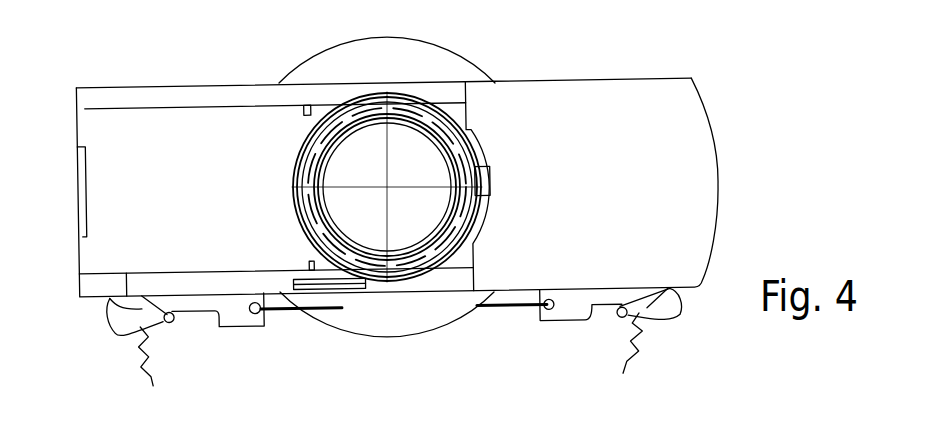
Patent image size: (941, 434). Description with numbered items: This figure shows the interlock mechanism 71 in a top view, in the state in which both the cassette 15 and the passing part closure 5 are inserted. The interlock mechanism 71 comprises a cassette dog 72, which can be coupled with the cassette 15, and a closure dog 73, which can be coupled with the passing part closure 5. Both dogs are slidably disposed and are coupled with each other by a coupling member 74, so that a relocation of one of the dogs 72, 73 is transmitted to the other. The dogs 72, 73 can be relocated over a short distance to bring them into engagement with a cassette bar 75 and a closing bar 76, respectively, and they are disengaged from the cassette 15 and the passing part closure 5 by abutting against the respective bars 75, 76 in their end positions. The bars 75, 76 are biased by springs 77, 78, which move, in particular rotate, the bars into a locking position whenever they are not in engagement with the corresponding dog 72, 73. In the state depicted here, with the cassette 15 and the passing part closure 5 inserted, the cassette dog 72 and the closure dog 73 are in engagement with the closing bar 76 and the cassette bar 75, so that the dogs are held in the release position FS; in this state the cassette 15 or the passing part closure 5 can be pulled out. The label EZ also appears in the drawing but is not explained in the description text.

The passing part closure 5 is at (588, 79).
The cassette 15 is at (187, 86).
The interlock mechanism 71 is at (384, 350).
The cassette dog 72 is at (228, 329).
The closure dog 73 is at (558, 322).
The coupling member 74 is at (281, 312).
The cassette bar 75 is at (112, 333).
The closing bar 76 is at (660, 318).
The spring 77 is at (626, 358).
The spring 78 is at (158, 371).
The reference plane EZ is at (116, 29).
The release position FS is at (383, 316).